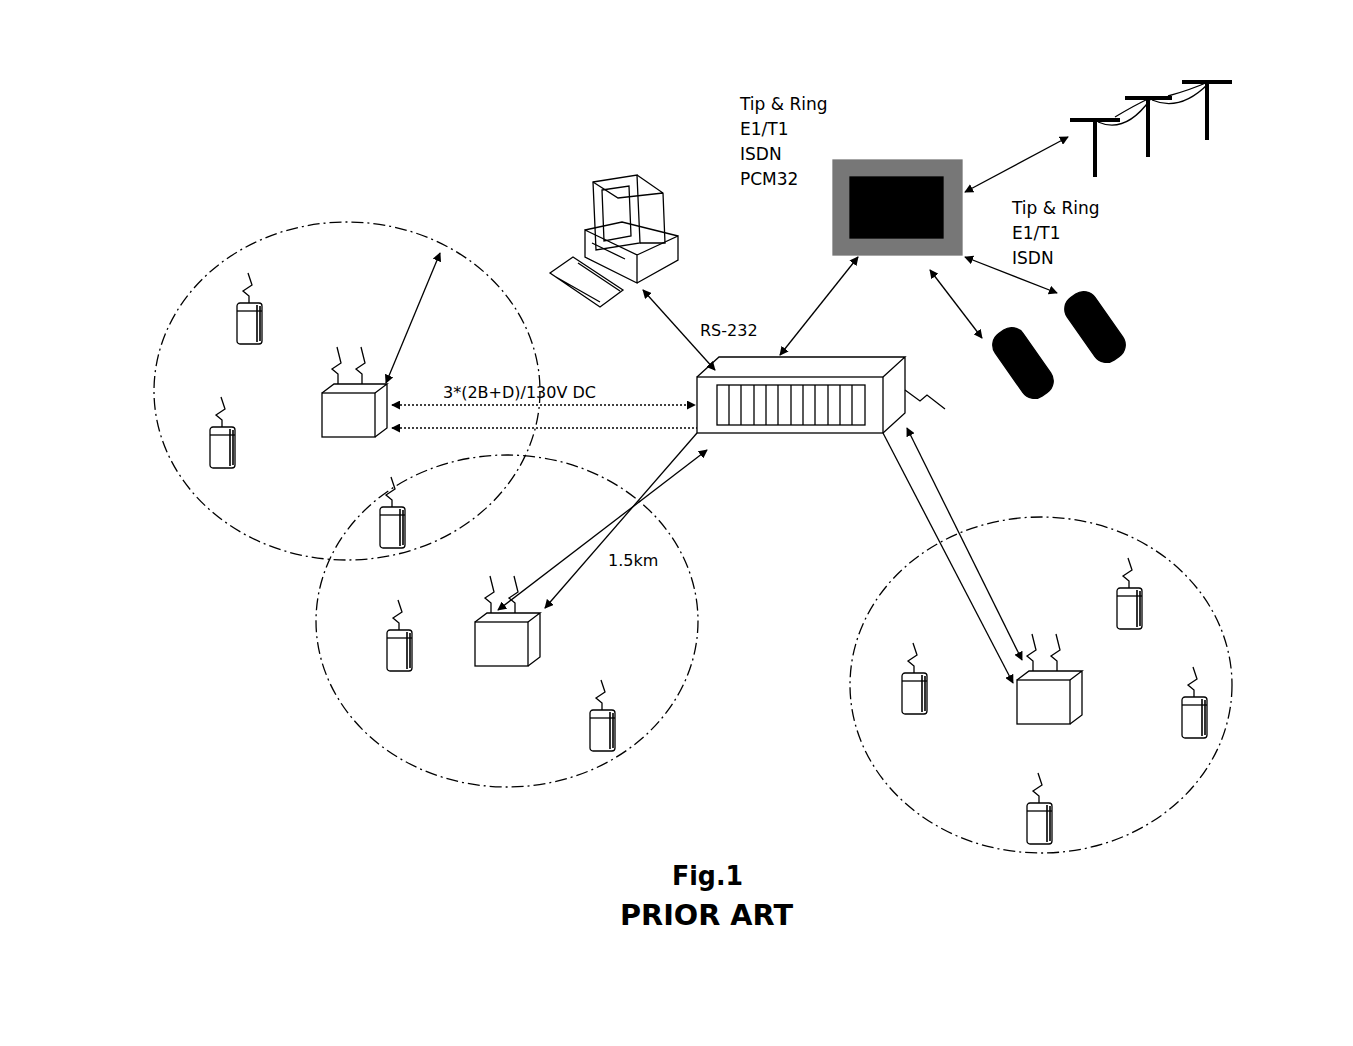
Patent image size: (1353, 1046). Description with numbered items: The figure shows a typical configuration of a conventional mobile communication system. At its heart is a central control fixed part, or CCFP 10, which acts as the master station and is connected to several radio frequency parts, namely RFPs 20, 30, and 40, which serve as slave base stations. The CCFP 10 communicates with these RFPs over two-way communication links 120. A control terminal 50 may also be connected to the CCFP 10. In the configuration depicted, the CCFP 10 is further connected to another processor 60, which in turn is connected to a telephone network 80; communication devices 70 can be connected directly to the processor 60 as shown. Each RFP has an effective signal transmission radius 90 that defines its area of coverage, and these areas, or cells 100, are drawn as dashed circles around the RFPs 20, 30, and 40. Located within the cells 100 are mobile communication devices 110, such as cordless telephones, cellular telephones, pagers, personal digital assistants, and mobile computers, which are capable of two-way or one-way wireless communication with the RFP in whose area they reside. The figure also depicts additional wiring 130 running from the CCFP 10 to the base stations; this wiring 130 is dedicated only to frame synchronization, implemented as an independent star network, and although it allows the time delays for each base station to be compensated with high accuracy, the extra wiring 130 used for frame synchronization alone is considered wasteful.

The central control fixed part (CCFP) 10 is at (790, 437).
The radio frequency part (RFP) 20 is at (322, 430).
The radio frequency part (RFP) 30 is at (500, 665).
The radio frequency part (RFP) 40 is at (1040, 722).
The control terminal 50 is at (633, 180).
The processor 60 is at (905, 160).
The communication devices 70 is at (1057, 400).
The telephone network 80 is at (1235, 108).
The effective signal transmission radius 90 is at (420, 300).
The cells 100 is at (172, 340).
The mobile communication devices 110 is at (380, 533).
The two-way communication links 120 is at (907, 470).
The wiring 130 is at (927, 537).